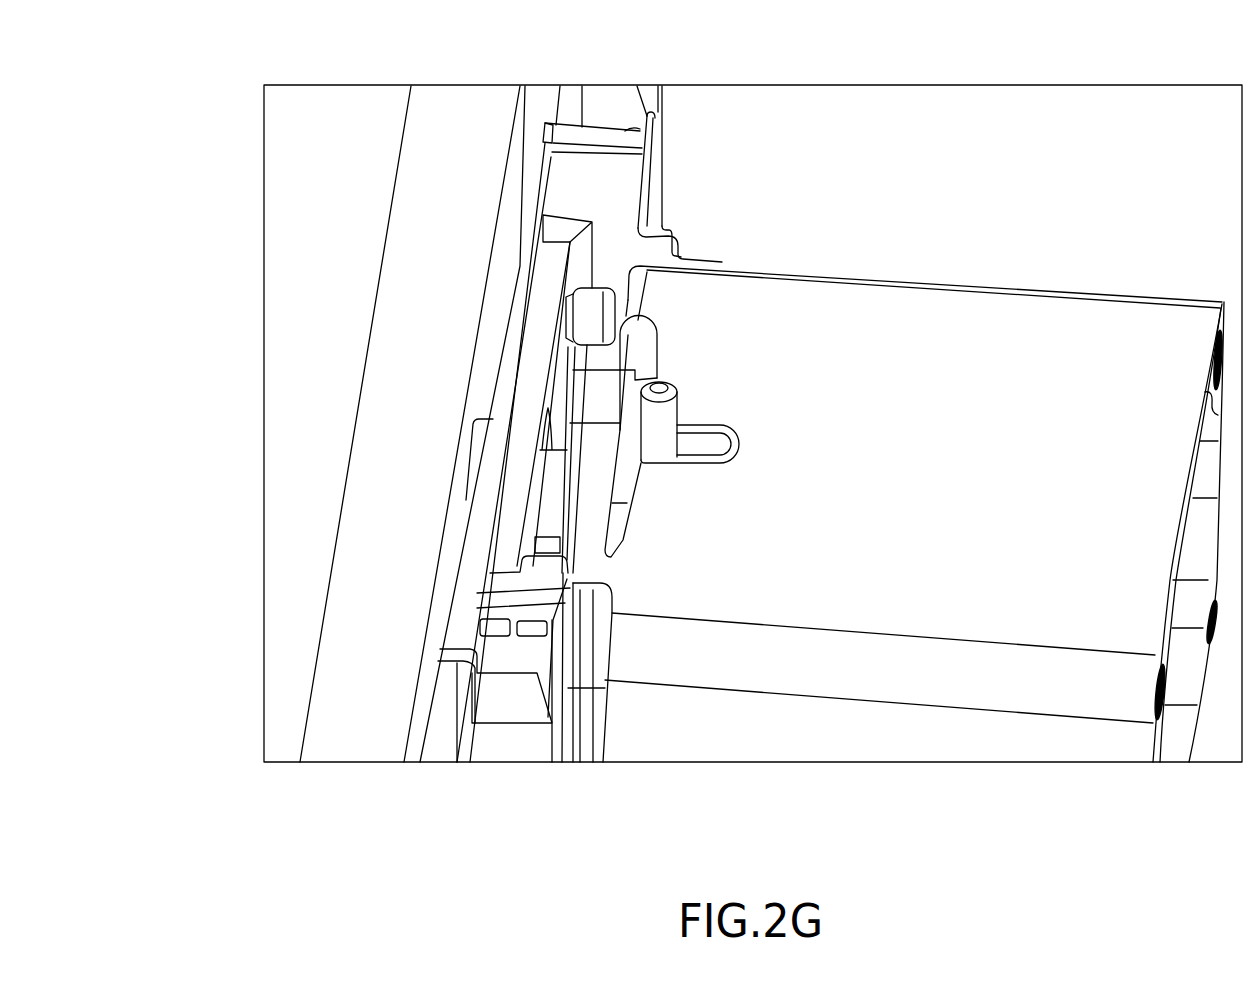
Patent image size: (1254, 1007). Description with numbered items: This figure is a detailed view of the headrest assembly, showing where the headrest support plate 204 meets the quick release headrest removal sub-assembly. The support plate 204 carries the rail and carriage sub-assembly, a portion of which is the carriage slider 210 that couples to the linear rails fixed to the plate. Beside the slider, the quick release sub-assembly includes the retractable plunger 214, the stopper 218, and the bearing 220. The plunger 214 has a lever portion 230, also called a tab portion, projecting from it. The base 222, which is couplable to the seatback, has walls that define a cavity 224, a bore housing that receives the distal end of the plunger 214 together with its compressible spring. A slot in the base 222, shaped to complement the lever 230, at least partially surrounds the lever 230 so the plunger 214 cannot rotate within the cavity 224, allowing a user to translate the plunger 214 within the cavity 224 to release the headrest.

The headrest support plate 204 is at (459, 98).
The carriage slider 210 is at (643, 189).
The retractable plunger 214 is at (661, 371).
The stopper 218 is at (470, 513).
The bearing 220 is at (578, 513).
The base 222 is at (1056, 320).
The cavity 224 is at (717, 450).
The lever portion 230 is at (660, 382).